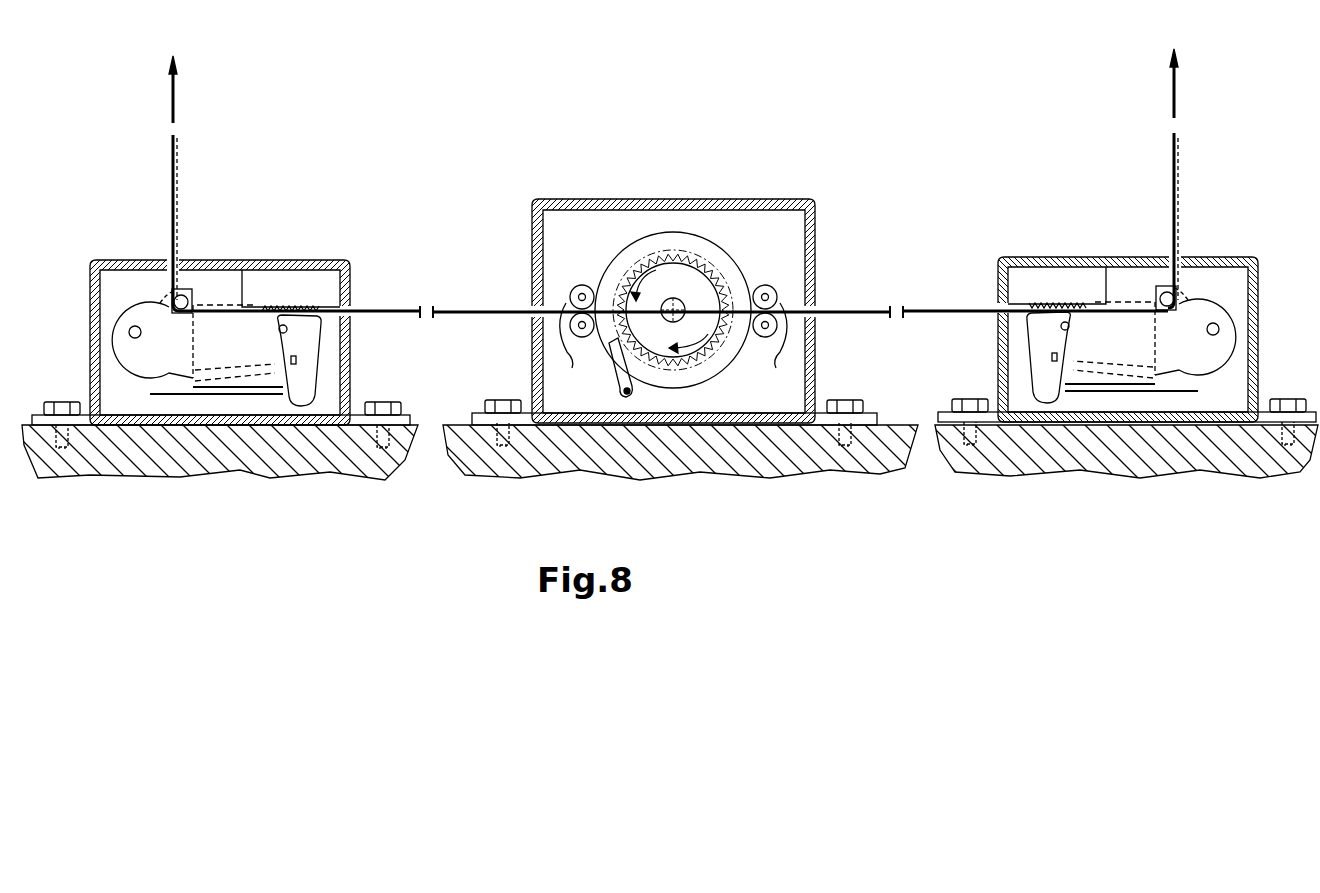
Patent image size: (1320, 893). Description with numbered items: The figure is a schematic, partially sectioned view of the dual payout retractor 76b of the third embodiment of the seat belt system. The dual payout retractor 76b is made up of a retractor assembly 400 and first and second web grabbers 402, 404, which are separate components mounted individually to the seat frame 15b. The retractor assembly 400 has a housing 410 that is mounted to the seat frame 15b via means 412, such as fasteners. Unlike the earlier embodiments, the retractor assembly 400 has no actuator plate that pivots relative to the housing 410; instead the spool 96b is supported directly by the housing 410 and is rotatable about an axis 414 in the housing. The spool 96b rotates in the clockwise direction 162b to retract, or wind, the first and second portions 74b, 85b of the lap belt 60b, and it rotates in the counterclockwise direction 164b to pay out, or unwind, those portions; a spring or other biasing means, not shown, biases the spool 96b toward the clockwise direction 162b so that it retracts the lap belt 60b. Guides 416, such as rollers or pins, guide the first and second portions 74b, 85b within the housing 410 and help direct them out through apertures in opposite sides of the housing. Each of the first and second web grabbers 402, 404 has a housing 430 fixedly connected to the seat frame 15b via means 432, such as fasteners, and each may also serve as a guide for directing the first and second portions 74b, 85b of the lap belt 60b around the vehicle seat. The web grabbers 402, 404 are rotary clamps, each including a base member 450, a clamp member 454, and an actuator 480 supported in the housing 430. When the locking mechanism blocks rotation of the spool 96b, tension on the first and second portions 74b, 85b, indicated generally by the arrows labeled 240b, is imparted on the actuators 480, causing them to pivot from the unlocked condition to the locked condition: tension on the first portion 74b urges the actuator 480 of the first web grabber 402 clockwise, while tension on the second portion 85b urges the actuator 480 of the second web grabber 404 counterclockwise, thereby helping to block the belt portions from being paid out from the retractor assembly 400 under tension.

The seat frame 15b is at (218, 455).
The housing 430 is at (283, 265).
The housing 410 is at (598, 200).
The means 432 is at (62, 403).
The means 412 is at (503, 402).
The actuator 480 is at (185, 320).
The clamp member 454 is at (318, 380).
The base member 450 is at (305, 290).
The spool 96b is at (697, 243).
The counterclockwise direction 164b is at (648, 277).
The axis 414 is at (676, 307).
The guides 416 is at (673, 339).
The clockwise direction 162b is at (695, 345).
The first portion 74b is at (832, 302).
The second portion 85b is at (172, 197).
The lap belt 60b is at (521, 302).
The arrows 240b is at (172, 105).
The second web grabber 404 is at (256, 188).
The first web grabber 402 is at (1037, 182).
The retractor assembly 400 is at (645, 138).
The dual payout retractor 76b is at (391, 104).